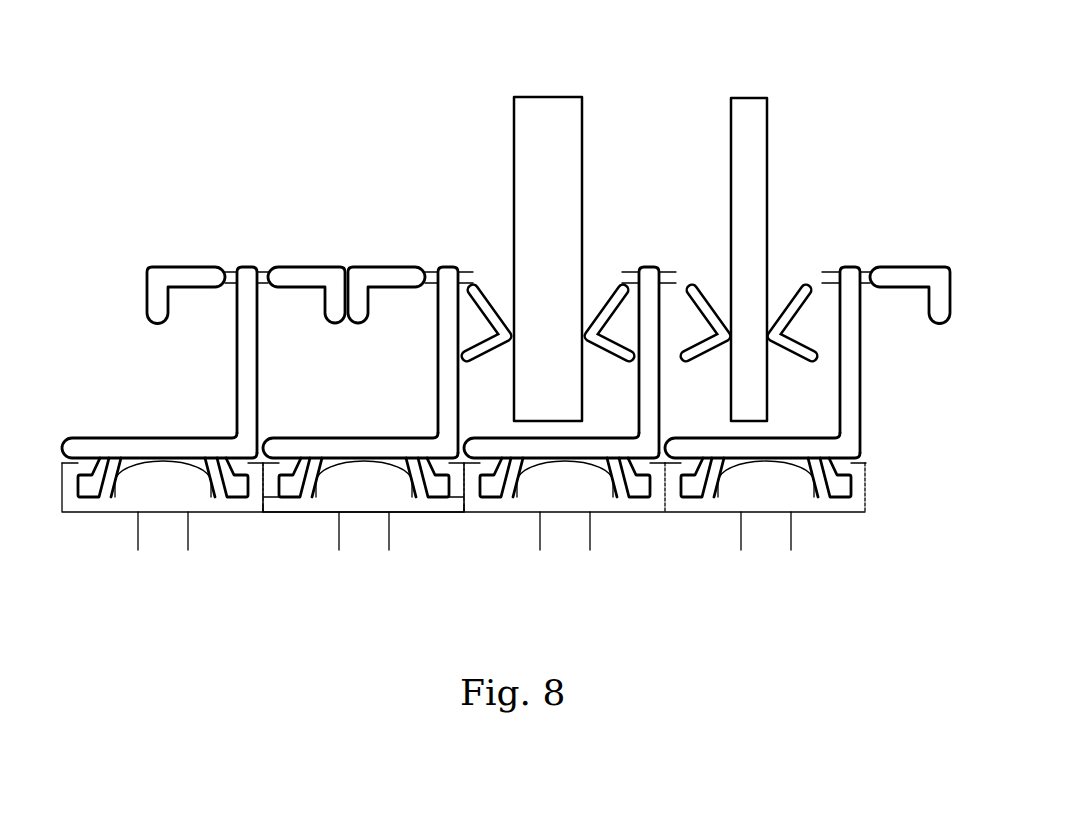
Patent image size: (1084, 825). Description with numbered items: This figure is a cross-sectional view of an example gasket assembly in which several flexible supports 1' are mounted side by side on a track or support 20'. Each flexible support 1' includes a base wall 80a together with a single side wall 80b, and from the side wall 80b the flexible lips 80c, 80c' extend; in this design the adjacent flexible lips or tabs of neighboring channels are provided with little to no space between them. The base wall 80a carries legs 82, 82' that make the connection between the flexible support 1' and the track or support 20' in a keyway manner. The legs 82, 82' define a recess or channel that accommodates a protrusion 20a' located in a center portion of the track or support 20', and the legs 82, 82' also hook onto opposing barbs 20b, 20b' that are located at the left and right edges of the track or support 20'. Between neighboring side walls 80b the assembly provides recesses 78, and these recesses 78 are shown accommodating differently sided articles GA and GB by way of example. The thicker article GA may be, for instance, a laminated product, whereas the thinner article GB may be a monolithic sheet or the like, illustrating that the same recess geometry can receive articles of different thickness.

The flexible support 1' is at (506, 372).
The flexible lip 80c is at (215, 230).
The flexible lip 80c' is at (346, 231).
The thicker article GA is at (530, 137).
The thinner article GB is at (745, 137).
The side wall 80b is at (245, 370).
The base wall 80a is at (152, 438).
The recess 78 is at (368, 375).
The leg 82 is at (298, 437).
The leg 82' is at (412, 444).
The barb 20b is at (297, 535).
The protrusion 20a' is at (364, 548).
The barb 20b' is at (435, 550).
The track or support 20' is at (316, 550).